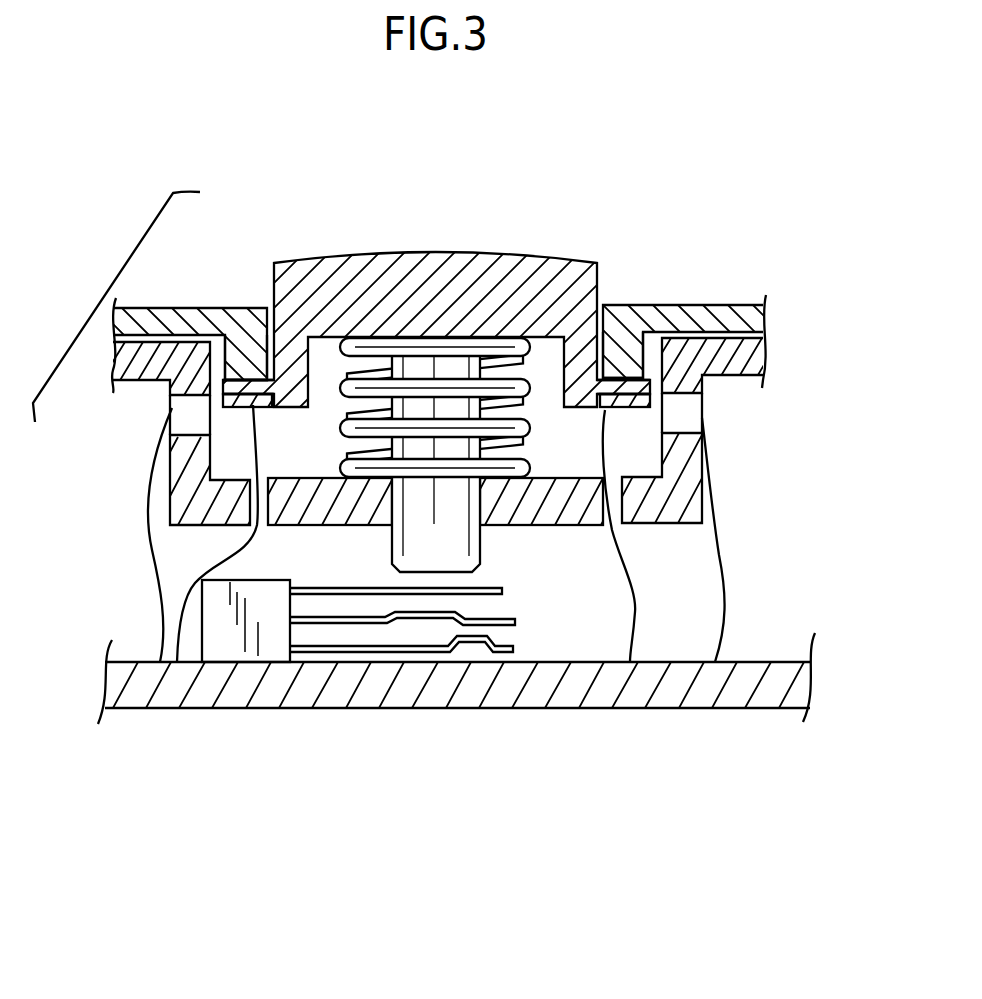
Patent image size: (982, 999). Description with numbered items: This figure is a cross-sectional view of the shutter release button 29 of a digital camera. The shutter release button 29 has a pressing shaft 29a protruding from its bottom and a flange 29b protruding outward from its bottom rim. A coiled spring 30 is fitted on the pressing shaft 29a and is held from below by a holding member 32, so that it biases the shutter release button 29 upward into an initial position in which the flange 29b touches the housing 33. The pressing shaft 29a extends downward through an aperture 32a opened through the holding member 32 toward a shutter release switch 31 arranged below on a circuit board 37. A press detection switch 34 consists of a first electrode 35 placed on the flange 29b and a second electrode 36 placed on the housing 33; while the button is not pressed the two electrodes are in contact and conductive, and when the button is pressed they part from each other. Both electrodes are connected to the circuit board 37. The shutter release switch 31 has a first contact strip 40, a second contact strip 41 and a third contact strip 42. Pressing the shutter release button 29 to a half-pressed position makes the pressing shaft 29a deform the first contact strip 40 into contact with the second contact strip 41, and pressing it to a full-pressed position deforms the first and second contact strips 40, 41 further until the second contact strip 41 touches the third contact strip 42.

The shutter release button 29 is at (432, 262).
The pressing shaft 29a is at (462, 552).
The flange 29b is at (263, 403).
The coiled spring 30 is at (423, 454).
The shutter release switch 31 is at (202, 605).
The holding member 32 is at (737, 358).
The aperture 32a is at (380, 527).
The housing 33 is at (733, 318).
The press detection switch 34 is at (108, 292).
The first electrode 35 is at (200, 412).
The second electrode 36 is at (252, 378).
The circuit board 37 is at (398, 710).
The first contact strip 40 is at (502, 589).
The second contact strip 41 is at (517, 620).
The third contact strip 42 is at (515, 648).